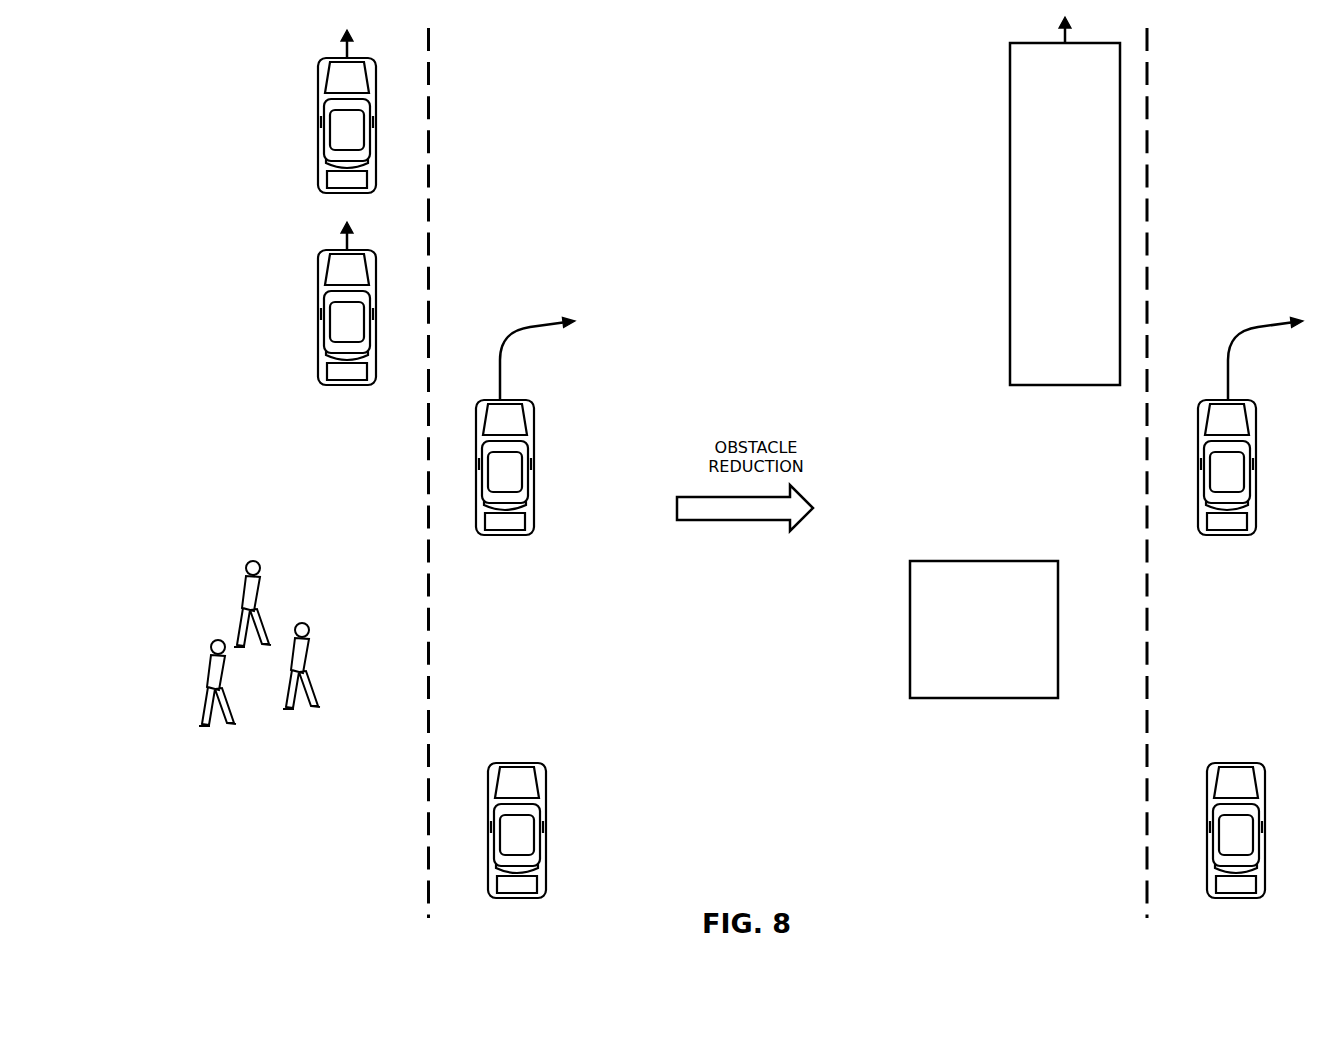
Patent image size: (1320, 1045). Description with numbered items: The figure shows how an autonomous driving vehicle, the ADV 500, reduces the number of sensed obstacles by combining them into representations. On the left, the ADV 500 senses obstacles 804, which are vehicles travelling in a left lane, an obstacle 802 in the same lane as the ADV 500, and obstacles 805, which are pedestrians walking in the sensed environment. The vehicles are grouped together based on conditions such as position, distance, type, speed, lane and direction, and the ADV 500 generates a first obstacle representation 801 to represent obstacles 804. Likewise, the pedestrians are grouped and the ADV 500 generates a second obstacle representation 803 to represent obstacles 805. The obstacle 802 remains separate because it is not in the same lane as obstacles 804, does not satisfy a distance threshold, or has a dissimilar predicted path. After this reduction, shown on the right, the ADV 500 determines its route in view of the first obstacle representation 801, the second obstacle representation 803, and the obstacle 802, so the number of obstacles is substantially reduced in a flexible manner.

The ADV 500 is at (542, 822).
The first obstacle representation 801 is at (1008, 180).
The obstacle 802 is at (534, 425).
The second obstacle representation 803 is at (981, 561).
The obstacles 804 is at (297, 237).
The obstacles 805 is at (287, 588).